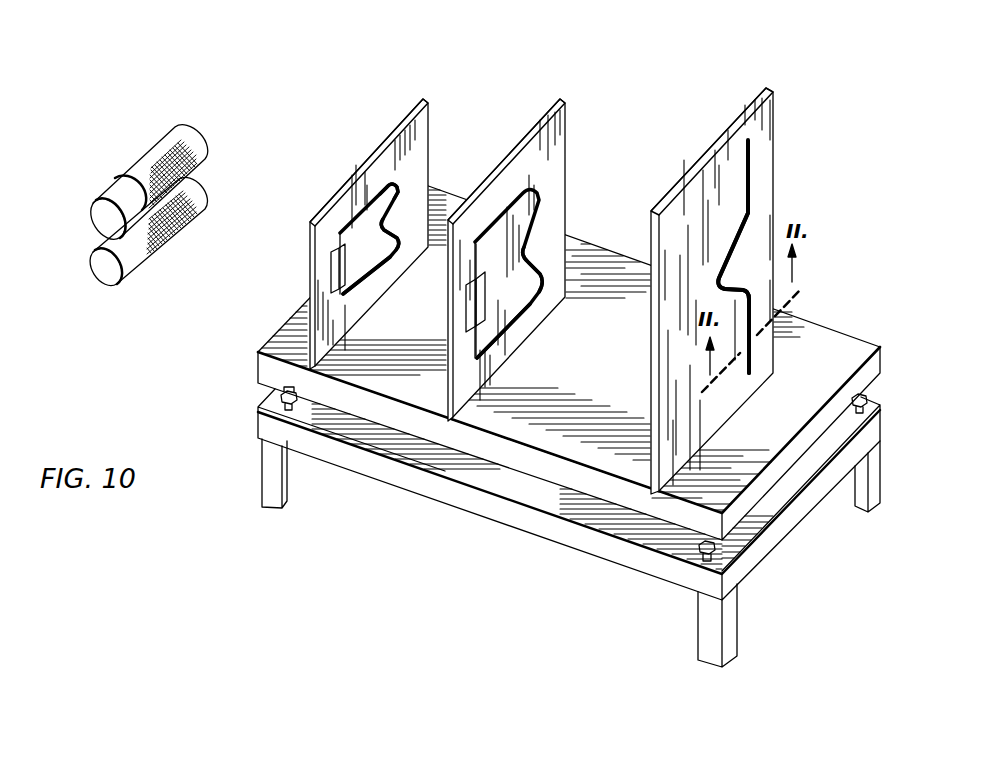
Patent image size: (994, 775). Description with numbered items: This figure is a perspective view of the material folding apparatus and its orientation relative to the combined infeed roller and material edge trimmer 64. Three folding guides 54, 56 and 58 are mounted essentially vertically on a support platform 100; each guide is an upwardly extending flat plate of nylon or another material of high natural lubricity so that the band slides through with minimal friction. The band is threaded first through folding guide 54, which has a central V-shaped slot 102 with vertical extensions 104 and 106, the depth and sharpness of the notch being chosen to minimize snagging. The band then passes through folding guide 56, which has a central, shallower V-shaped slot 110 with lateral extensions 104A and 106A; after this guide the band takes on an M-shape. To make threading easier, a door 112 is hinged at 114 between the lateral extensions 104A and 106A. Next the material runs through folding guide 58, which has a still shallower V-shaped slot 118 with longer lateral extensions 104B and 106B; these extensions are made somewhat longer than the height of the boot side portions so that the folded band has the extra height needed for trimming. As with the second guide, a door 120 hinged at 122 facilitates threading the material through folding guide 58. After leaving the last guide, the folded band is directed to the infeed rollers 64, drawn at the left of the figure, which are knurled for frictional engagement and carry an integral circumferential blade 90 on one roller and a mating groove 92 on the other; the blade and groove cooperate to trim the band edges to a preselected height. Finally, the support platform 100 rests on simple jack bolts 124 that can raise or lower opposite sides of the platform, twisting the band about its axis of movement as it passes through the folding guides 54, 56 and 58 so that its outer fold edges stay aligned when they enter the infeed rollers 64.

The folding guide 54 is at (760, 118).
The folding guide 56 is at (558, 133).
The folding guide 58 is at (418, 128).
The combined infeed roller and material edge trimmer 64 is at (193, 142).
The integral circumferential blade 90 is at (115, 180).
The mating groove 92 is at (148, 252).
The support platform 100 is at (838, 345).
The V-shaped slot 102 is at (742, 236).
The vertical extension 104 is at (756, 182).
The lateral extension 104A is at (500, 208).
The lateral extension 104B is at (363, 183).
The vertical extension 106 is at (736, 372).
The lateral extension 106A is at (526, 310).
The lateral extension 106B is at (380, 265).
The V-shaped slot 110 is at (529, 252).
The door 112 is at (506, 259).
The hinge 114 is at (472, 300).
The V-shaped slot 118 is at (393, 182).
The door 120 is at (380, 224).
The hinge 122 is at (333, 258).
The jack bolts 124 is at (280, 398).